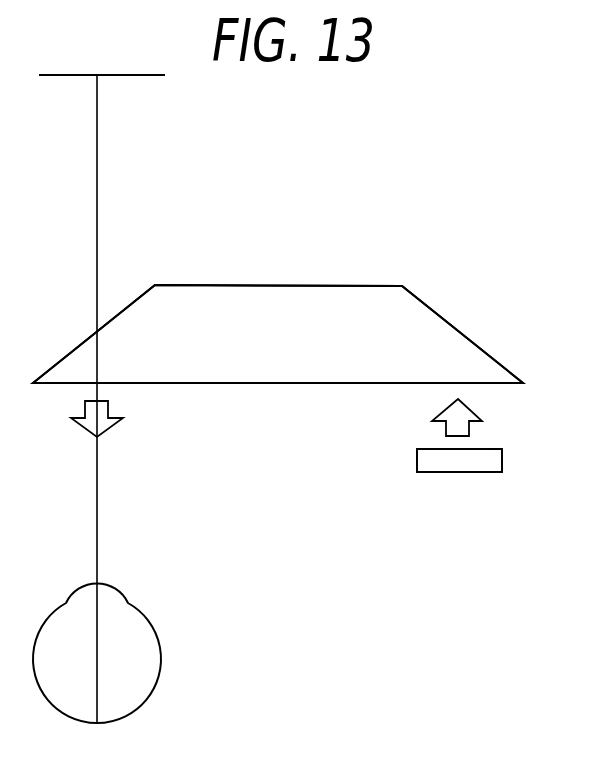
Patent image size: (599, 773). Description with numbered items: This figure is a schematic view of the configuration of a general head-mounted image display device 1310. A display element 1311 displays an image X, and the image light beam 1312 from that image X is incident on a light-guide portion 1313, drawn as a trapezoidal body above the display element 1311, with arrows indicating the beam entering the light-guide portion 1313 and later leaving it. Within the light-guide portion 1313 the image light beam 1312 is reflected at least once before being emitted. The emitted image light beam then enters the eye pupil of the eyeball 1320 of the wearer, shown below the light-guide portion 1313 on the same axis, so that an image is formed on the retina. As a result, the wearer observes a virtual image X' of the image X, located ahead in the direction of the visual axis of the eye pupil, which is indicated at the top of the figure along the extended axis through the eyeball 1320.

The head-mounted image display device 1310 is at (440, 238).
The display element 1311 is at (488, 473).
The image light beam 1312 is at (108, 406).
The light-guide portion 1313 is at (448, 333).
The eyeball 1320 is at (182, 620).
The image X is at (512, 438).
The virtual image X' is at (122, 399).